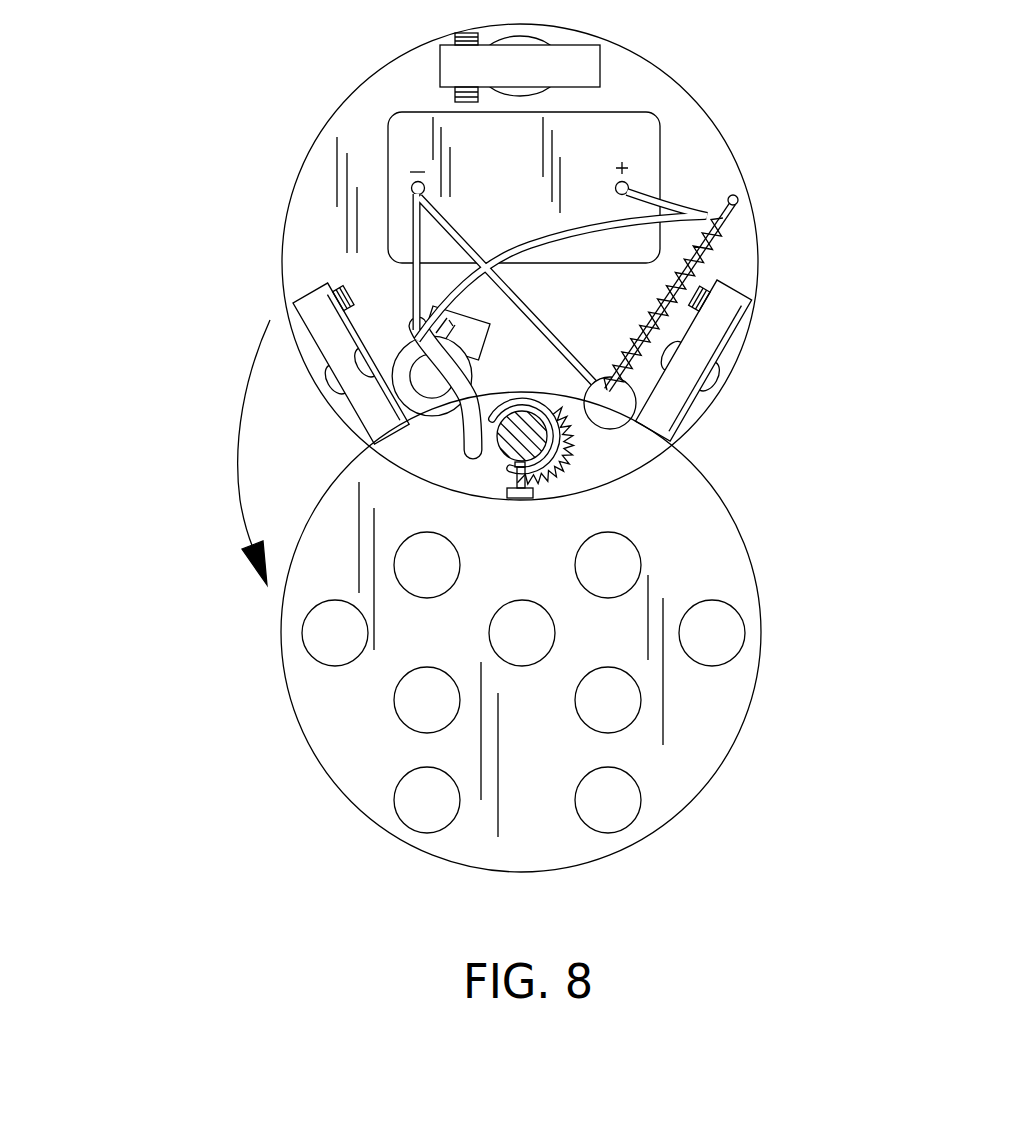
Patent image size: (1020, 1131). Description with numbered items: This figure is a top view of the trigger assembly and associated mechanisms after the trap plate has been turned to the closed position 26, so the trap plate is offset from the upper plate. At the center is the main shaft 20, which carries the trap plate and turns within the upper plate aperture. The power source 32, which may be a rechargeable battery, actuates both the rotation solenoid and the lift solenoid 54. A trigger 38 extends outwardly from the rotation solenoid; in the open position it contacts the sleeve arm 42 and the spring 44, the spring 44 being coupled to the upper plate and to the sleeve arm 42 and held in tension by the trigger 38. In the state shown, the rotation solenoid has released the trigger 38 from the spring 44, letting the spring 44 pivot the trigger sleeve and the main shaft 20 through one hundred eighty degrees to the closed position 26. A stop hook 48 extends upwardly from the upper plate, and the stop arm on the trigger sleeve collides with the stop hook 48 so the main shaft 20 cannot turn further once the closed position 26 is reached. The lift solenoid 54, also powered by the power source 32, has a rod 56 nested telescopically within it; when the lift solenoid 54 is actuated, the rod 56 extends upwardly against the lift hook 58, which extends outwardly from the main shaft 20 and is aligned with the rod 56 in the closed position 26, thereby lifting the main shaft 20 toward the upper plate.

The main shaft 20 is at (523, 440).
The closed position 26 is at (125, 200).
The power source 32 is at (632, 135).
The trigger 38 is at (518, 369).
The sleeve arm 42 is at (505, 470).
The spring 44 is at (705, 290).
The stop hook 48 is at (533, 500).
The lift solenoid 54 is at (430, 412).
The rod 56 is at (455, 195).
The lift hook 58 is at (436, 300).